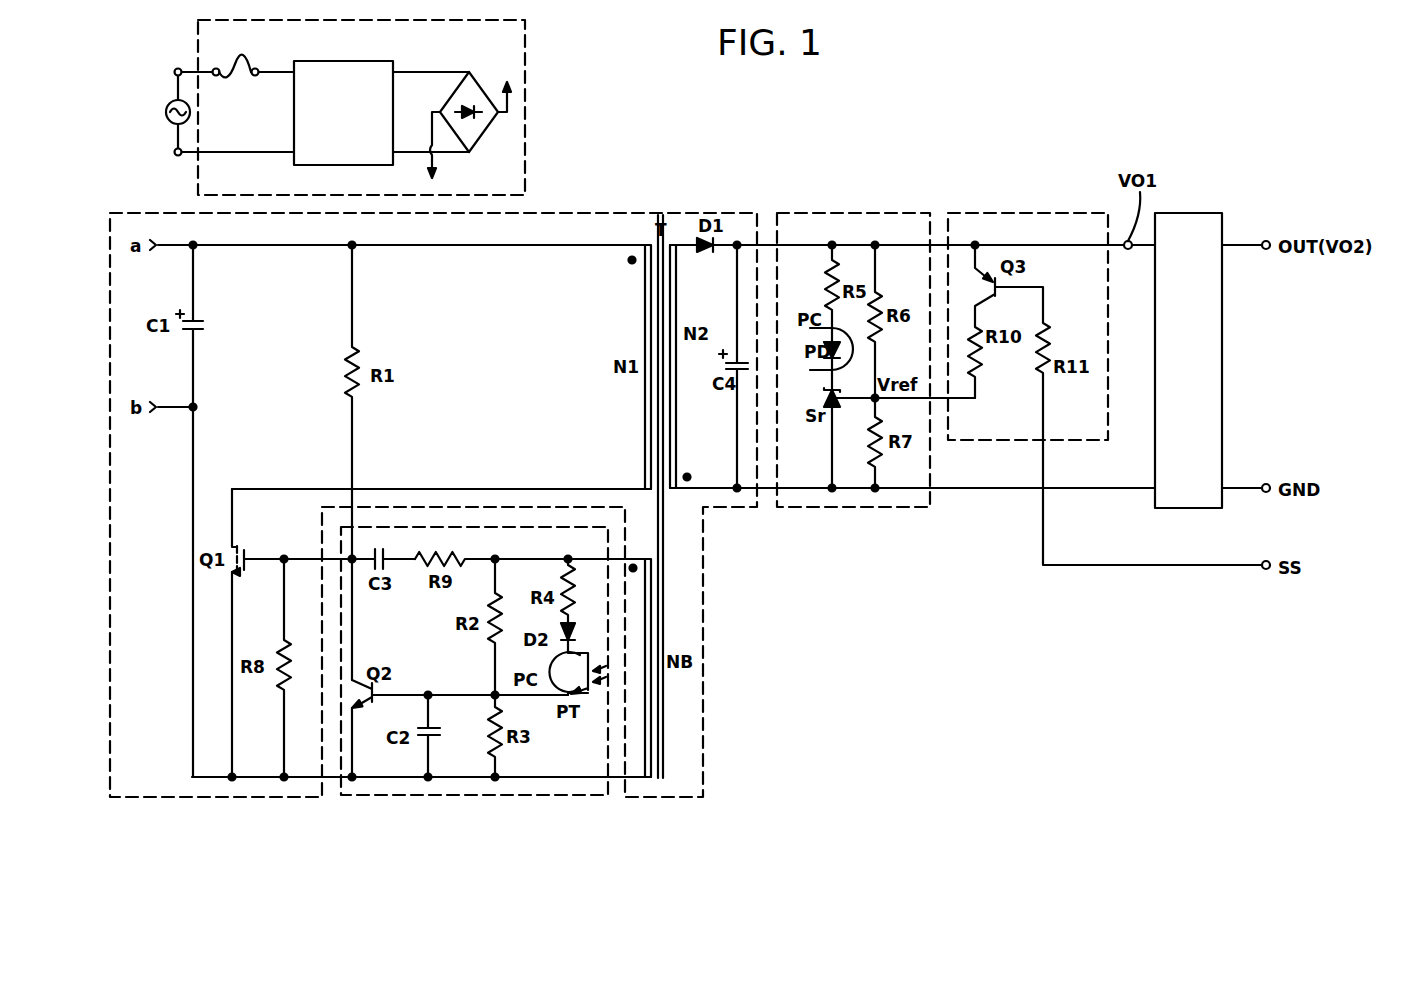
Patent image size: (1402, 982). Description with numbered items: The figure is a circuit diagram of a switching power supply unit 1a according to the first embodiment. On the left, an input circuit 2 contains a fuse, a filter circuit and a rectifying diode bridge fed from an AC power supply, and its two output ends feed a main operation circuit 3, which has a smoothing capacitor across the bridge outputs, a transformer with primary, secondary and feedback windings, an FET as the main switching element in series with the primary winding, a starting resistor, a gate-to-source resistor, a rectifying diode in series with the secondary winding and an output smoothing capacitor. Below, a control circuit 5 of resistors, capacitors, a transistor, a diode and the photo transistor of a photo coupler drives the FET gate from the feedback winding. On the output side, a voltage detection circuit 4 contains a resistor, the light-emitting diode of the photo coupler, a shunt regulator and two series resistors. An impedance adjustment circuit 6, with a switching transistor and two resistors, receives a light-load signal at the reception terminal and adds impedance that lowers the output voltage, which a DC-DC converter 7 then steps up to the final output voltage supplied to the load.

The switching power supply unit 1a is at (952, 180).
The input circuit 2 is at (512, 170).
The main operation circuit 3 is at (622, 216).
The voltage detection circuit 4 is at (861, 218).
The control circuit 5 is at (490, 784).
The impedance adjustment circuit 6 is at (1066, 216).
The DC-DC converter 7 is at (1192, 226).